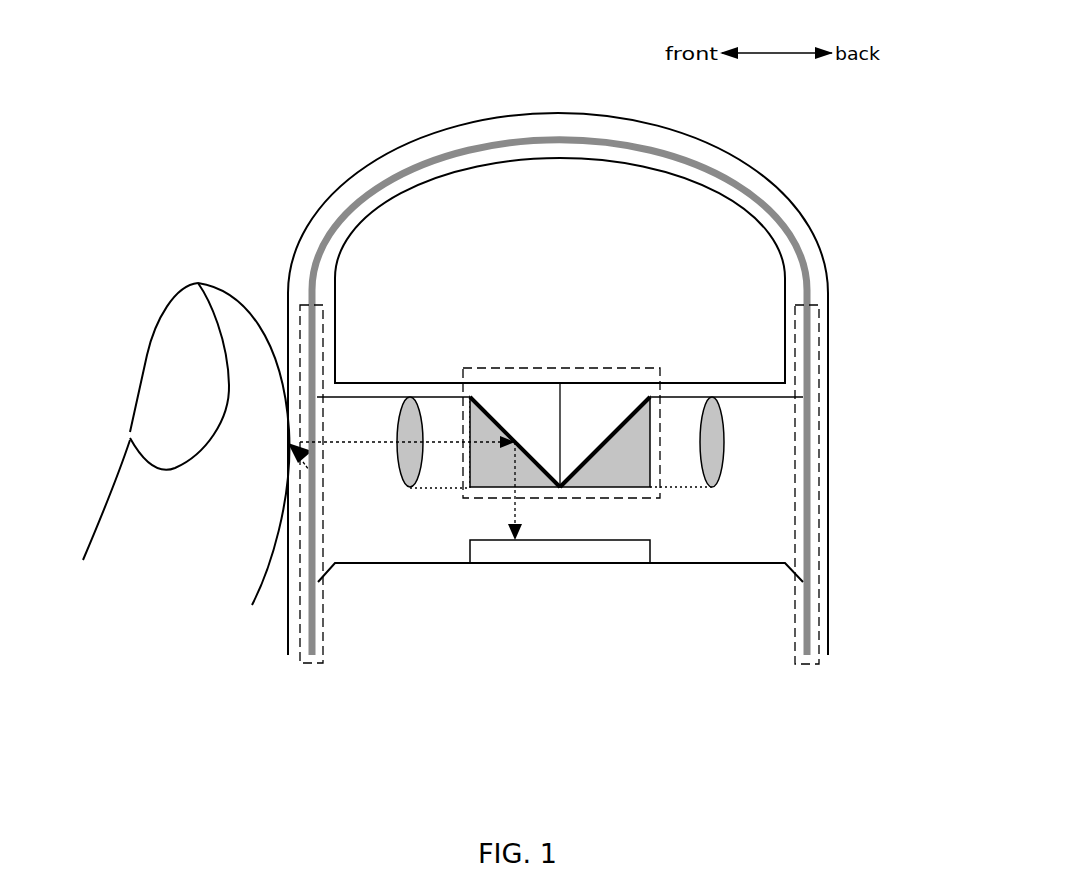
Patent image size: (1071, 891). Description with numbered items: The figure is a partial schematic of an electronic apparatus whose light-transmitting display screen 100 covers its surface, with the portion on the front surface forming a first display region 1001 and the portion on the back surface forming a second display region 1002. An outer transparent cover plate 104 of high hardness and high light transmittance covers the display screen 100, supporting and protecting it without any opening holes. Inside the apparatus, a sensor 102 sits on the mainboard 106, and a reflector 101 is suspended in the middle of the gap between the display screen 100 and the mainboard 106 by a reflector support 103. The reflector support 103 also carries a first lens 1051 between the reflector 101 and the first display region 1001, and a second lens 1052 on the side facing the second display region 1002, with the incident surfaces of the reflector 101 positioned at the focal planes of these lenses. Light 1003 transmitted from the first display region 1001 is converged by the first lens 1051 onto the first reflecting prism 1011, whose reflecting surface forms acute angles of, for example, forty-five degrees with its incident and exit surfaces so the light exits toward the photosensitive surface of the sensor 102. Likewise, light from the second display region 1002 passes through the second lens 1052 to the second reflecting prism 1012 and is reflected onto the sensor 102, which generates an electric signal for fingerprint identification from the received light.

The display screen 100 is at (333, 222).
The reflector 101 is at (643, 368).
The sensor 102 is at (483, 552).
The reflector support 103 is at (569, 431).
The transparent cover plate 104 is at (827, 473).
The mainboard 106 is at (715, 565).
The first display region 1001 is at (302, 630).
The second display region 1002 is at (798, 643).
The light 1003 is at (357, 443).
The first reflecting prism 1011 is at (492, 460).
The second reflecting prism 1012 is at (607, 440).
The first lens 1051 is at (410, 397).
The second lens 1052 is at (712, 397).